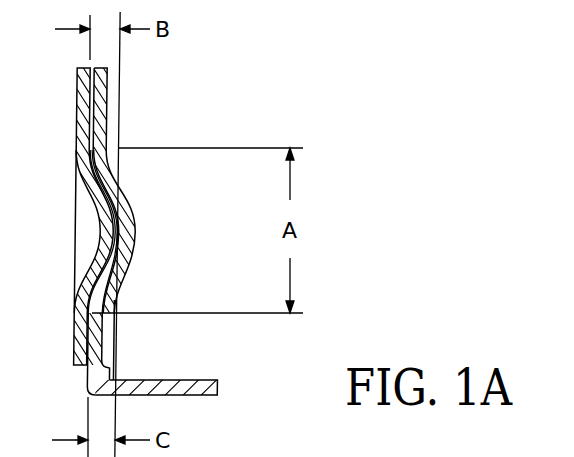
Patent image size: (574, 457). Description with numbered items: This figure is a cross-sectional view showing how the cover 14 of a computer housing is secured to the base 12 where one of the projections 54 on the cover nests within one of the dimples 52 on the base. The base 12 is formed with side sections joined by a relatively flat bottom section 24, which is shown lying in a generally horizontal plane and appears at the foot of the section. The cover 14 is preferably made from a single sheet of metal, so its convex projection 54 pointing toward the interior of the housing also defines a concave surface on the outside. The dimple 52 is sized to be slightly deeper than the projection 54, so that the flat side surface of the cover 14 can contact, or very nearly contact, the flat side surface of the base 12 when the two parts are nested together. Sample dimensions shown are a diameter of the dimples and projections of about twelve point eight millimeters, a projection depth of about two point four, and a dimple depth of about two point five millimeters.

The base 12 is at (100, 114).
The cover 14 is at (78, 117).
The bottom section 24 is at (204, 392).
The dimple 52 is at (126, 244).
The projection 54 is at (97, 239).